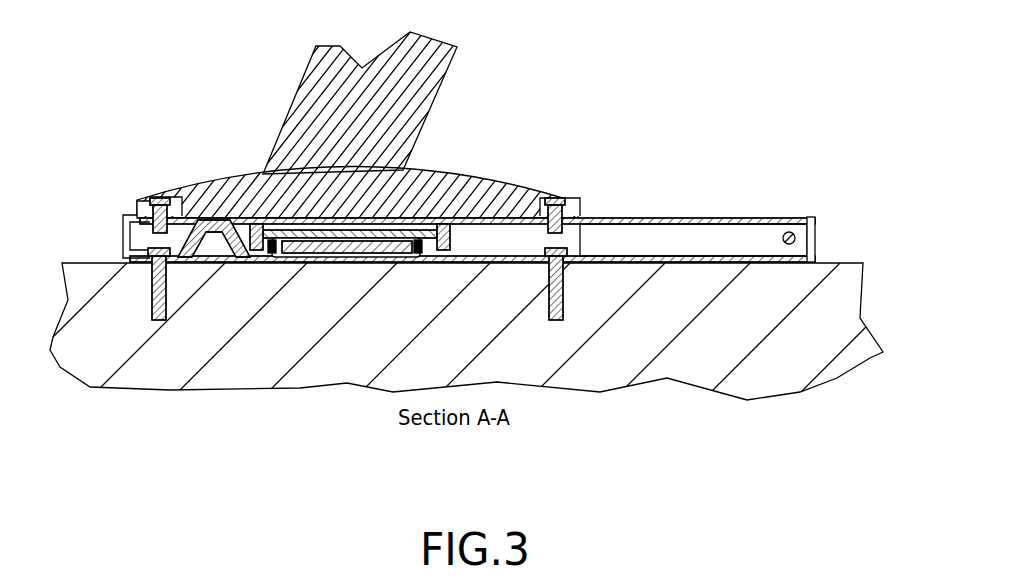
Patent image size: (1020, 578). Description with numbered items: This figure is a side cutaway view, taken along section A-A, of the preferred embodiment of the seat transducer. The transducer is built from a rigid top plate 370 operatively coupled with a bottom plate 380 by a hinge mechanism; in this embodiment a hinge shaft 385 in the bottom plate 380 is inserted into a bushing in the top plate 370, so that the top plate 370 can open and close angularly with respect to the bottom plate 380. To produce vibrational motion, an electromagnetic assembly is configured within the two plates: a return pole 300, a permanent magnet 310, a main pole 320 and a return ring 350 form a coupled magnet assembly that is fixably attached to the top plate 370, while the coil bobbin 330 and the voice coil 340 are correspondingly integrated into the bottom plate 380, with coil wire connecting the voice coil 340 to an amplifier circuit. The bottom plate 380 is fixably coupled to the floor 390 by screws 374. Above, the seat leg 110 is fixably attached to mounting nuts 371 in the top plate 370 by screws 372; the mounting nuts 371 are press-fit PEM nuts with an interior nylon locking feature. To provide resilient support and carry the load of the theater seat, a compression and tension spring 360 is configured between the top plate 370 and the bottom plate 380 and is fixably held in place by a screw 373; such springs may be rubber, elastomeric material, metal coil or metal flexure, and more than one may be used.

The seat leg 110 is at (398, 93).
The return pole 300 is at (405, 222).
The permanent magnet 310 is at (330, 230).
The main pole 320 is at (366, 253).
The coil bobbin 330 is at (423, 258).
The voice coil 340 is at (268, 262).
The return ring 350 is at (443, 231).
The compression and tension spring 360 is at (135, 247).
The top plate 370 is at (688, 220).
The mounting nuts 371 is at (132, 222).
The screws 372 is at (162, 200).
The screw 373 is at (215, 226).
The screws 374 is at (153, 298).
The bottom plate 380 is at (807, 258).
The hinge shaft 385 is at (790, 232).
The floor 390 is at (758, 327).